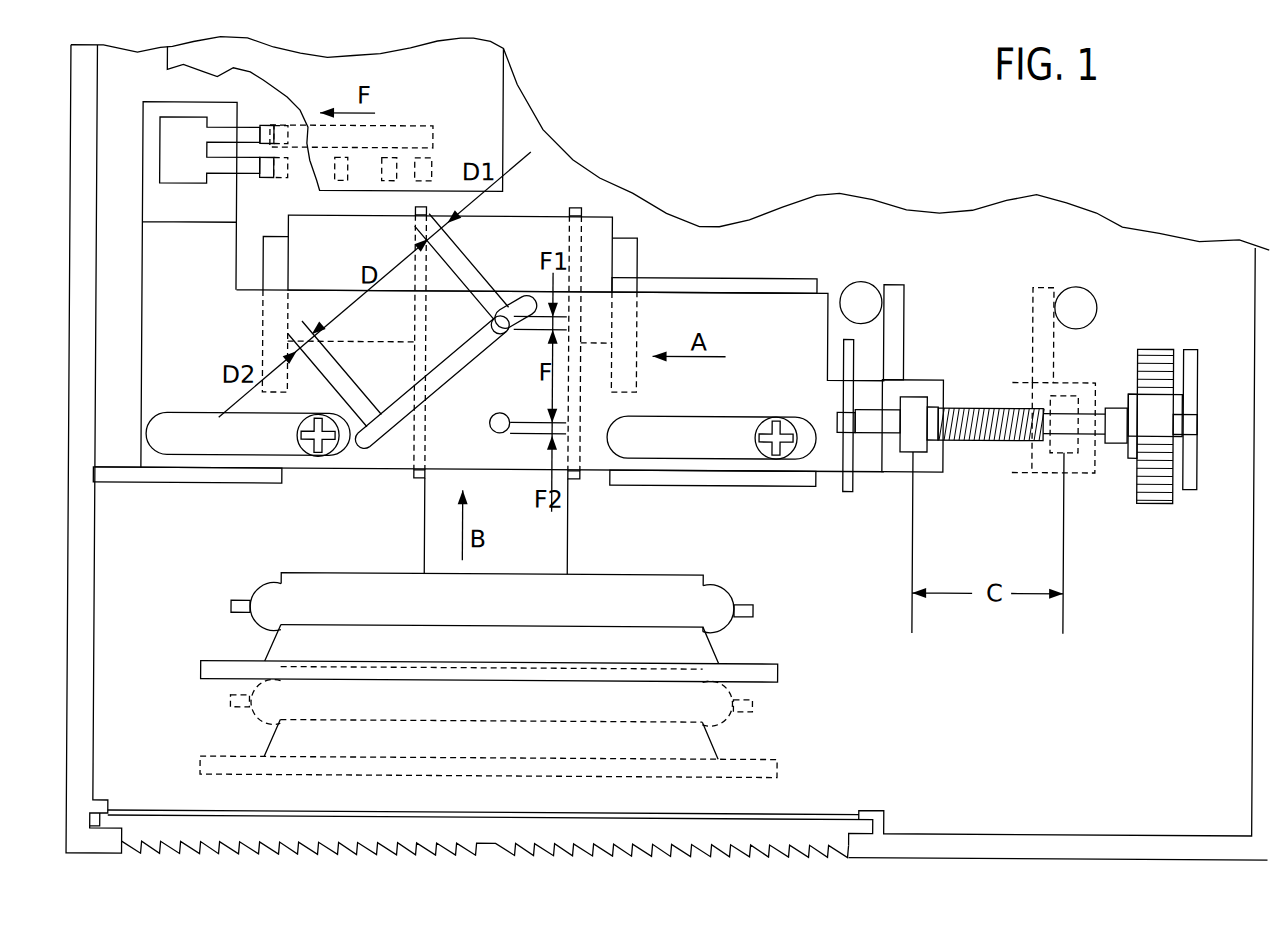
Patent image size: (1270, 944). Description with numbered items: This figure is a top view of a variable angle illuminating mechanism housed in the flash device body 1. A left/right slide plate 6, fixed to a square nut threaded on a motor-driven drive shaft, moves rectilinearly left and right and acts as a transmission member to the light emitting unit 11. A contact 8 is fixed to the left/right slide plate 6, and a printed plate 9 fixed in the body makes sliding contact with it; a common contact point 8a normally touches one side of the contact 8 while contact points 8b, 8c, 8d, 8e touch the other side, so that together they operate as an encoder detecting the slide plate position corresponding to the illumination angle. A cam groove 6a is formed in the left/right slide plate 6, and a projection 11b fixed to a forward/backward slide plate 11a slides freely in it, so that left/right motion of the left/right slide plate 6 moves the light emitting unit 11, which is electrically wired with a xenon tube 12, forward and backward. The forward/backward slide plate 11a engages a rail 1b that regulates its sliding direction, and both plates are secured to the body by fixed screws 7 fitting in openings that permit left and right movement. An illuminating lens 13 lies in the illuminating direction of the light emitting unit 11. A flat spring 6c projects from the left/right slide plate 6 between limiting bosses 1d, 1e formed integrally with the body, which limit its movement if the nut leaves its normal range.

The flash device body 1 is at (85, 717).
The rail 1b is at (417, 218).
The limiting boss 1d is at (853, 282).
The limiting boss 1e is at (1073, 289).
The left/right slide plate 6 is at (783, 307).
The cam groove 6a is at (368, 446).
The flat spring 6c is at (893, 308).
The fixed screws 7 is at (298, 429).
The contact 8 is at (187, 165).
The common contact point 8a is at (313, 126).
The contact point 8b is at (289, 180).
The contact point 8c is at (347, 182).
The contact point 8d is at (390, 182).
The contact point 8e is at (431, 163).
The printed plate 9 is at (433, 55).
The light emitting unit 11 is at (280, 640).
The forward/backward slide plate 11a is at (435, 545).
The projection 11b is at (515, 293).
The xenon tube 12 is at (267, 595).
The illuminating lens 13 is at (178, 832).